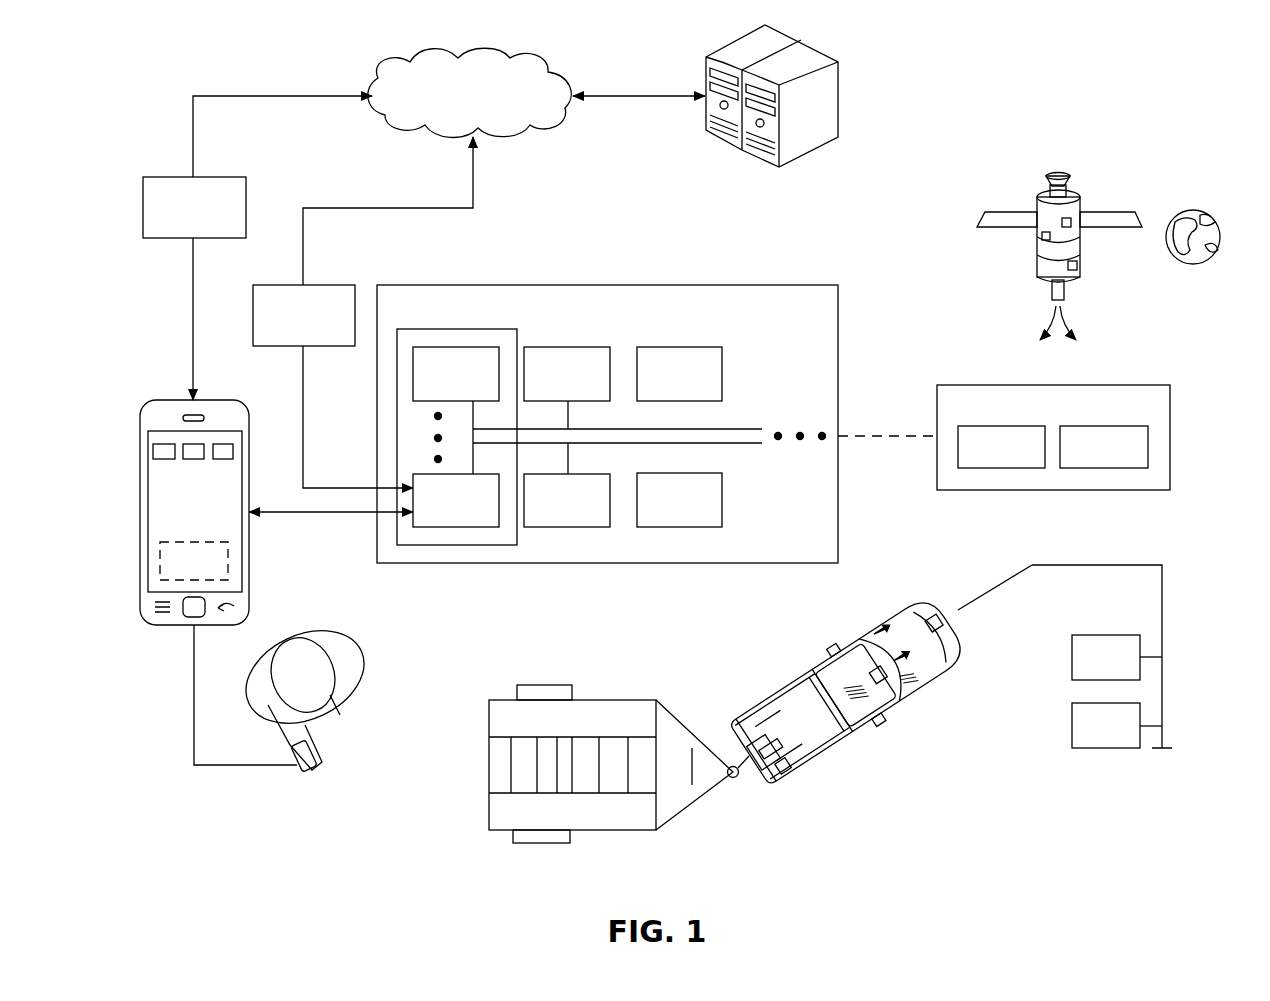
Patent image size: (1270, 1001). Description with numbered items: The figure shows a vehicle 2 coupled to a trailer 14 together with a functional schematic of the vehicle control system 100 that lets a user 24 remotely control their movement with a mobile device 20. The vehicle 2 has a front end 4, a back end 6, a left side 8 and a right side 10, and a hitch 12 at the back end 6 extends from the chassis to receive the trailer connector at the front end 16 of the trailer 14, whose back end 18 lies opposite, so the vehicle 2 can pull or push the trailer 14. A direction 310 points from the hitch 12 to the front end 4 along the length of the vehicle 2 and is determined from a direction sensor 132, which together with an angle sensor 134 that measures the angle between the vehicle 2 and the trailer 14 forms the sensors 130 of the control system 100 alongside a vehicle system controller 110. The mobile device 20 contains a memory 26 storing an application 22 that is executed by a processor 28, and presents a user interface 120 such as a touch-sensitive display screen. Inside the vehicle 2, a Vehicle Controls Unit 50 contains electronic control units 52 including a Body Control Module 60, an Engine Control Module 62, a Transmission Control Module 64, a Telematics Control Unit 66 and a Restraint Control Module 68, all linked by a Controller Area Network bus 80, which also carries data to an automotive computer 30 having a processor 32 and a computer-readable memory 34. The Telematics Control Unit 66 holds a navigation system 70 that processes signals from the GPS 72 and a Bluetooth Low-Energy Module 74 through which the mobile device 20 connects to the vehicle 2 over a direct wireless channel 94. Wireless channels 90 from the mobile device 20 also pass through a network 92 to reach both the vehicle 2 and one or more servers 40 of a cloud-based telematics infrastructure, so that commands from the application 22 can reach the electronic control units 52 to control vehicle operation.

The vehicle 2 is at (866, 711).
The front end 4 is at (950, 670).
The back end 6 is at (735, 735).
The left side 8 is at (834, 650).
The right side 10 is at (879, 720).
The hitch 12 is at (742, 795).
The trailer 14 is at (585, 760).
The front end 16 is at (675, 778).
The back end 18 is at (578, 752).
The mobile device 20 is at (154, 488).
The application 22 is at (225, 443).
The user 24 is at (350, 650).
The memory 26 is at (152, 450).
The processor 28 is at (188, 443).
The automotive computer 30 is at (990, 385).
The processor 32 is at (1010, 426).
The computer-readable memory 34 is at (1115, 426).
The server 40 is at (853, 96).
The Vehicle Controls Unit 50 is at (430, 285).
The electronic control units 52 is at (745, 330).
The Body Control Module 60 is at (552, 390).
The Engine Control Module 62 is at (665, 390).
The Transmission Control Module 64 is at (552, 516).
The Telematics Control Unit 66 is at (450, 329).
The Restraint Control Module 68 is at (665, 516).
The Navigation system 70 is at (441, 390).
The GPS 72 is at (1058, 166).
The Bluetooth Low-Energy Module 74 is at (441, 516).
The Controller Area Network bus 80 is at (737, 445).
The wireless channel 90 is at (193, 308).
The network 92 is at (417, 63).
The wireless channel 94 is at (330, 515).
The vehicle control system 100 is at (1147, 621).
The vehicle system controller 110 is at (1085, 673).
The user interface 120 is at (155, 493).
The sensors 130 is at (1085, 741).
The direction sensor 132 is at (878, 675).
The angle sensor 134 is at (771, 756).
The direction 310 is at (934, 623).